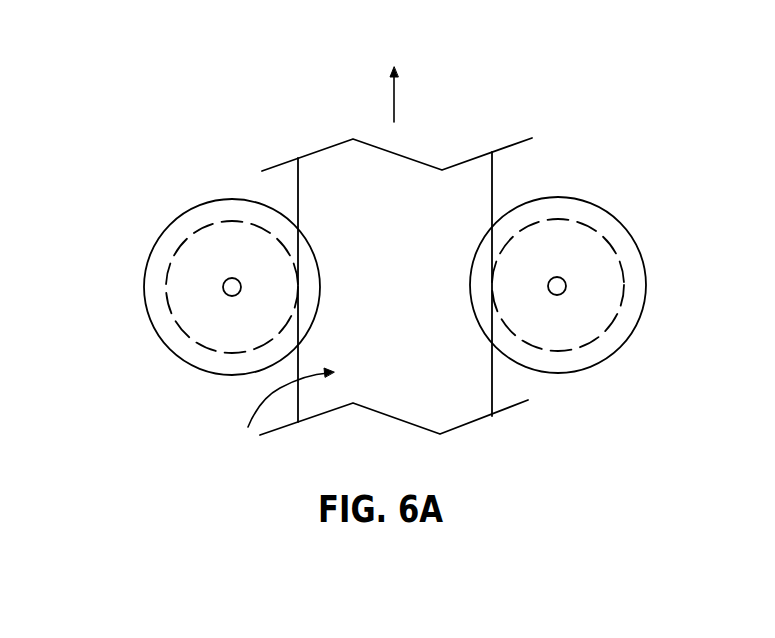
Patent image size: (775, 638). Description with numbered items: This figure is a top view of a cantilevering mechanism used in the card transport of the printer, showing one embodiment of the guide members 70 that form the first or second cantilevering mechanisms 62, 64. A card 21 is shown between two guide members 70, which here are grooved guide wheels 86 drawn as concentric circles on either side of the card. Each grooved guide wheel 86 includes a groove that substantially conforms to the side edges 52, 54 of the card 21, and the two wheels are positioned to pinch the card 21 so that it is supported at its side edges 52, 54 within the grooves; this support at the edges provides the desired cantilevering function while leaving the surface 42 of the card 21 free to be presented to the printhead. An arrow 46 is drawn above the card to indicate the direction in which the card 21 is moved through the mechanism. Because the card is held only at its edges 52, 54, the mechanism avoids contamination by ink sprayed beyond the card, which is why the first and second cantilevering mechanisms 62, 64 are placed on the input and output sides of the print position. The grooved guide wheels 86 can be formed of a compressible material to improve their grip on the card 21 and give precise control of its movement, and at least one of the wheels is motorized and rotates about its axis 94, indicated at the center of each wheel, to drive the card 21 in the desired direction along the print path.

The card 21 is at (462, 178).
The surface of card 42 is at (374, 404).
The direction arrow 46 is at (394, 100).
The side edge 52 is at (492, 389).
The side edge 54 is at (298, 369).
The first cantilevering mechanism 62 is at (464, 245).
The second cantilevering mechanism 64 is at (591, 129).
The guide members 70 is at (407, 262).
The grooved guide wheels 86 is at (195, 205).
The axis 94 is at (241, 283).